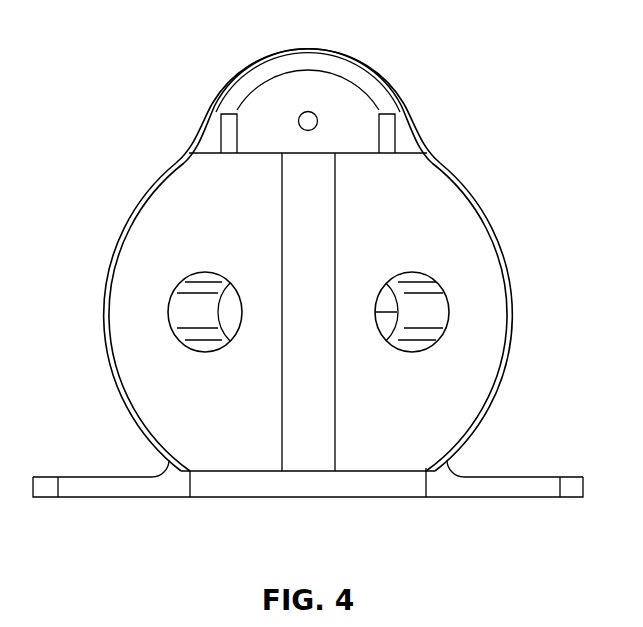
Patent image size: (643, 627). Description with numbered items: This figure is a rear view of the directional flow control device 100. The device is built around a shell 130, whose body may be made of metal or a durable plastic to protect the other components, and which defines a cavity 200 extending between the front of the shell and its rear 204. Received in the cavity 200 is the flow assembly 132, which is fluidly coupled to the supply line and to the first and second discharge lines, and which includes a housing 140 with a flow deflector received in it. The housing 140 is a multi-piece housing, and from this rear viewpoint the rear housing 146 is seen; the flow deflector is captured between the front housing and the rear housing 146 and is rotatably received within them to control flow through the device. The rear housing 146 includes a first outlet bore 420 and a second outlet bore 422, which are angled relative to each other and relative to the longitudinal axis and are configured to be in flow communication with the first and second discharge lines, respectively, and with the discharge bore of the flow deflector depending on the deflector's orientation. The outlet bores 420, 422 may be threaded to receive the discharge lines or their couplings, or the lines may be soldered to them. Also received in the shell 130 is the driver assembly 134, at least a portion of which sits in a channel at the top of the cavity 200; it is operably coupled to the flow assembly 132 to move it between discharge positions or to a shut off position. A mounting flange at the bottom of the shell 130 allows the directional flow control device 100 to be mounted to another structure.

The directional flow control device 100 is at (436, 48).
The shell 130 is at (420, 132).
The driver assembly 134 is at (262, 108).
The cavity 200 is at (212, 141).
The rear 204 is at (498, 222).
The first outlet bore 420 is at (190, 313).
The second outlet bore 422 is at (430, 313).
The flow assembly 132 is at (260, 442).
The housing 140 is at (400, 430).
The rear housing 146 is at (450, 390).